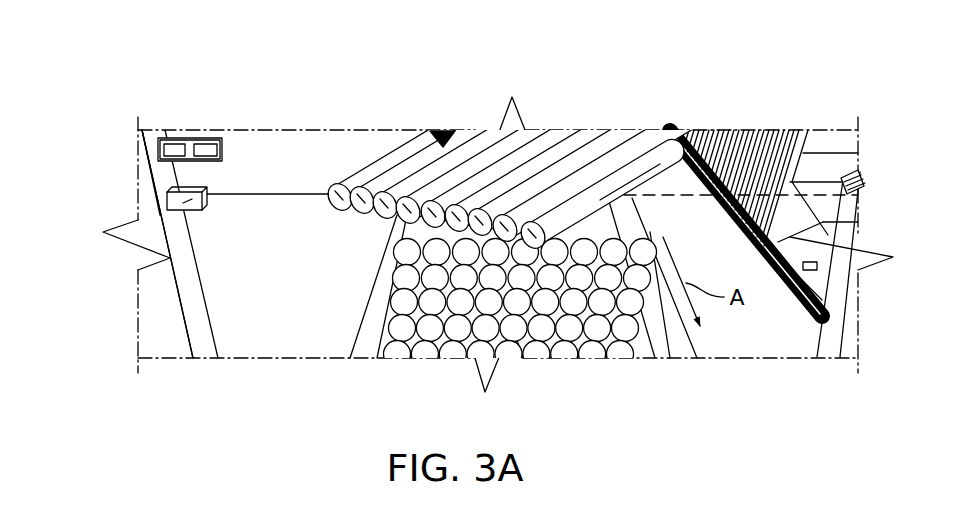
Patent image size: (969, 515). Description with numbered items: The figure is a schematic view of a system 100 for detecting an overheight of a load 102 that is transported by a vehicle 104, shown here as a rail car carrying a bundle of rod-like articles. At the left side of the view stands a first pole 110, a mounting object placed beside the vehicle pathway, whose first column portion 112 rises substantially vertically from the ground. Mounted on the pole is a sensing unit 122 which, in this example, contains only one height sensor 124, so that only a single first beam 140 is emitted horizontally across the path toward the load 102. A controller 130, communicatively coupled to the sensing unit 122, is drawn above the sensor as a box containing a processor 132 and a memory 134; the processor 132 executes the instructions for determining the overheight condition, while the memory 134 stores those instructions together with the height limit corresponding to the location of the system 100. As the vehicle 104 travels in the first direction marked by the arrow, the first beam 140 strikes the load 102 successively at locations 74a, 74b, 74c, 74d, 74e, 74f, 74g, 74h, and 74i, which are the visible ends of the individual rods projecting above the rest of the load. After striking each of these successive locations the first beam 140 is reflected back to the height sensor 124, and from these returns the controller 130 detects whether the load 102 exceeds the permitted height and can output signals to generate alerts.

The system 100 is at (147, 158).
The load 102 is at (625, 178).
The vehicle 104 is at (682, 346).
The first pole 110 is at (194, 336).
The first column portion 112 is at (174, 280).
The sensing unit 122 is at (163, 200).
The height sensor 124 is at (188, 203).
The controller 130 is at (179, 137).
The processor 132 is at (167, 137).
The memory 134 is at (214, 137).
The first beam 140 is at (249, 196).
The location 74a is at (548, 222).
The location 74b is at (505, 224).
The location 74c is at (478, 216).
The location 74d is at (452, 212).
The location 74e is at (428, 216).
The location 74f is at (405, 205).
The location 74g is at (383, 200).
The location 74h is at (358, 196).
The location 74i is at (338, 192).